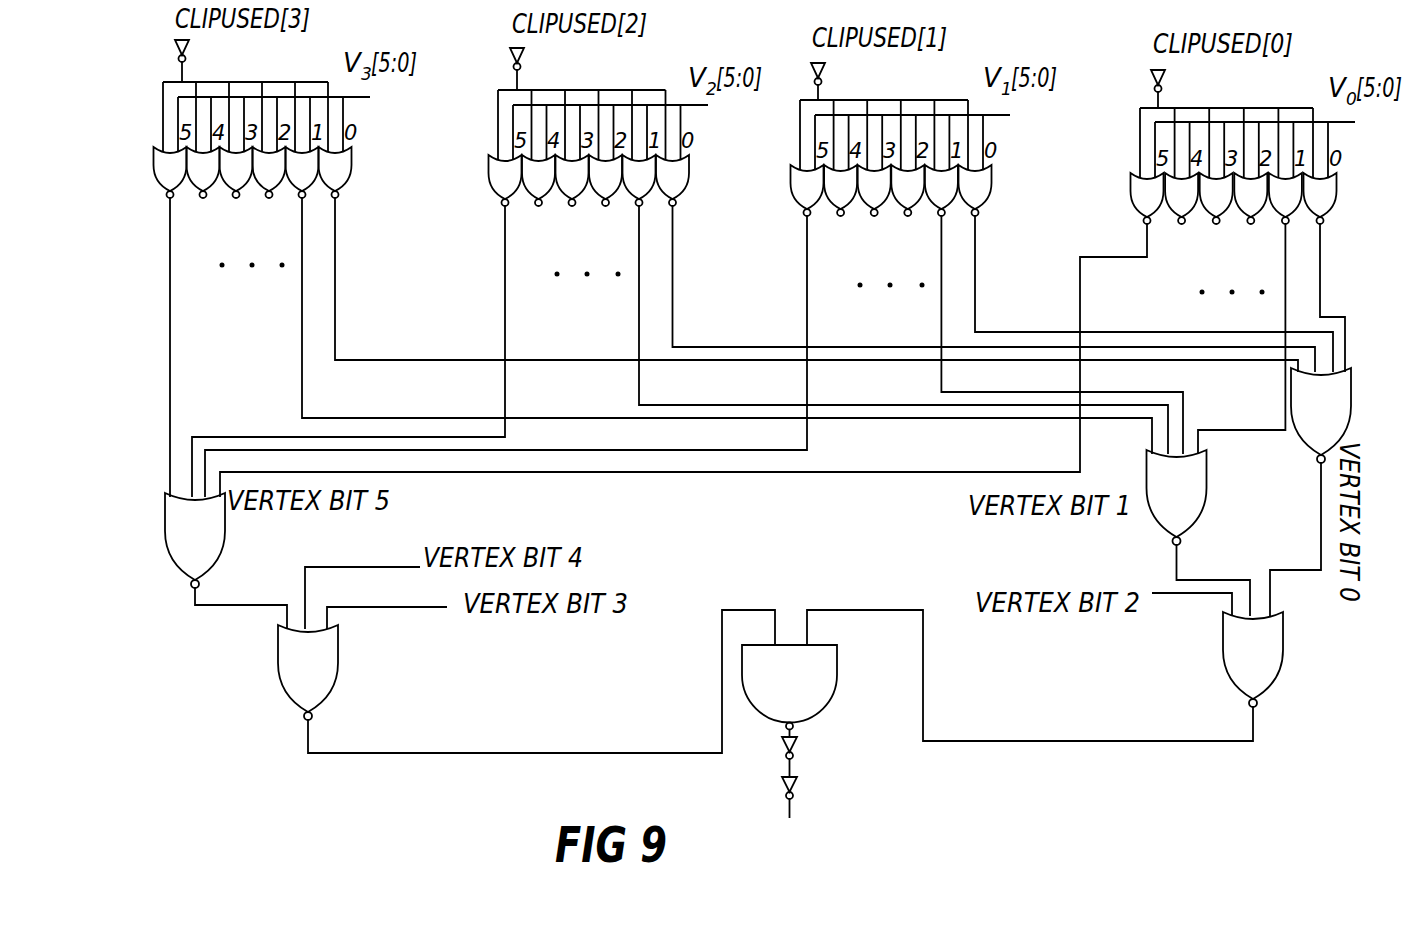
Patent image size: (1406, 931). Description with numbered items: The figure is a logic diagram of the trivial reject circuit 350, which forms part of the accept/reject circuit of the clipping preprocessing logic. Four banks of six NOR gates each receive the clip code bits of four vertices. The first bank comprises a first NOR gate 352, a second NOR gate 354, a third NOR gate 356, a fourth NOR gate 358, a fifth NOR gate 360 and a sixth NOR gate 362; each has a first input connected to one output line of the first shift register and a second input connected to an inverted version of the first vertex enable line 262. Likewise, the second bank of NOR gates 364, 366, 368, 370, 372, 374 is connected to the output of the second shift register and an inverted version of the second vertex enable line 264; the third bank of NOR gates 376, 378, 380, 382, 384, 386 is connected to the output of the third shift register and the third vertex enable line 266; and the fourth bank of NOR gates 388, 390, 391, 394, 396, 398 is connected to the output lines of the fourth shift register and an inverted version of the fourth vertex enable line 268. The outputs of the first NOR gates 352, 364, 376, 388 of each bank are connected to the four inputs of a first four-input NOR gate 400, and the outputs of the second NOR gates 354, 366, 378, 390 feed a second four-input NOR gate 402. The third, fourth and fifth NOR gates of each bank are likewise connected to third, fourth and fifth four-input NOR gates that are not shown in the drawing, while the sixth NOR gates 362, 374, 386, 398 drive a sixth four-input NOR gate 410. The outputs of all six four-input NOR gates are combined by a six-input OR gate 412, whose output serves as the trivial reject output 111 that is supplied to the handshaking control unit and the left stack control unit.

The trivial reject output line 111 is at (786, 808).
The first vertex enable line 262 is at (1159, 68).
The second vertex enable line 264 is at (818, 62).
The third vertex enable line 266 is at (518, 47).
The fourth vertex enable line 268 is at (183, 39).
The trivial reject circuit 350 is at (256, 753).
The first NOR gate 352 is at (1332, 208).
The second NOR gate 354 is at (1292, 212).
The third NOR gate 356 is at (1258, 212).
The fourth NOR gate 358 is at (1223, 212).
The fifth NOR gate 360 is at (1189, 212).
The sixth NOR gate 362 is at (1154, 212).
The first NOR gate 364 is at (987, 200).
The second NOR gate 366 is at (948, 204).
The third NOR gate 368 is at (915, 204).
The fourth NOR gate 370 is at (881, 204).
The fifth NOR gate 372 is at (848, 204).
The sixth NOR gate 374 is at (814, 204).
The first NOR gate of third bank 376 is at (684, 190).
The second NOR gate of third bank 378 is at (646, 194).
The third NOR gate of third bank 380 is at (612, 194).
The fourth NOR gate of third bank 382 is at (579, 194).
The fifth NOR gate of third bank 384 is at (546, 194).
The sixth NOR gate of third bank 386 is at (512, 194).
The first NOR gate of fourth bank 388 is at (347, 182).
The second NOR gate of fourth bank 390 is at (309, 186).
The NOR gate for V3 bit 2 391 is at (276, 186).
The fourth NOR gate of fourth bank 394 is at (243, 186).
The fifth NOR gate of fourth bank 396 is at (210, 186).
The sixth NOR gate of fourth bank 398 is at (177, 186).
The first four-input NOR gate 400 is at (1343, 413).
The second four-input NOR gate 402 is at (1197, 498).
The sixth four-input NOR gate 410 is at (214, 546).
The six-input OR gate 412 is at (963, 808).